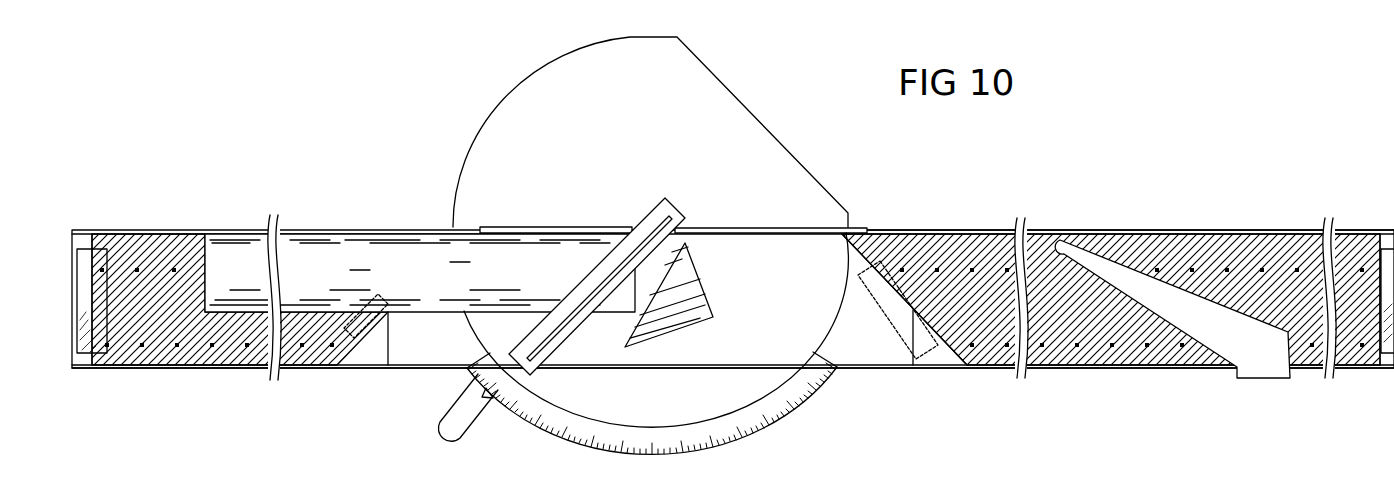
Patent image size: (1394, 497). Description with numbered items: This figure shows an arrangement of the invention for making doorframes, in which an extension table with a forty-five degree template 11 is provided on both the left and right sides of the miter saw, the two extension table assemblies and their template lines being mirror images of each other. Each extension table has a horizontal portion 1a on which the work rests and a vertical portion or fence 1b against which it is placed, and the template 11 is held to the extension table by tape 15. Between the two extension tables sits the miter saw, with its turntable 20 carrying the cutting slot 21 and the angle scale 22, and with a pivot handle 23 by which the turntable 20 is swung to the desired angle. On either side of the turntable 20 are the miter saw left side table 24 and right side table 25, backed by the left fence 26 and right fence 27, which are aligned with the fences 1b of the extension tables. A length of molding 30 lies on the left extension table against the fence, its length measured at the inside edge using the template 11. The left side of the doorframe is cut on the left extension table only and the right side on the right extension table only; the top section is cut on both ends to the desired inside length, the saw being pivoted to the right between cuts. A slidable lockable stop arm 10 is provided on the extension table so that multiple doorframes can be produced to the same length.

The horizontal portion of extension table 1a is at (206, 368).
The vertical portion or fence of extension table 1b is at (1209, 230).
The slidable lockable stop arm 10 is at (1233, 355).
The template 11 is at (318, 368).
The tape holding template to extension table 15 is at (83, 353).
The miter saw turntable 20 is at (672, 392).
The miter saw cutting slot 21 is at (540, 362).
The miter saw angle scale 22 is at (790, 402).
The miter saw pivot handle 23 is at (483, 418).
The miter saw left side table 24 is at (414, 352).
The miter saw right side table 25 is at (852, 343).
The miter saw left fence 26 is at (528, 227).
The miter saw right fence 27 is at (770, 228).
The molding for picture frame 30 is at (408, 279).